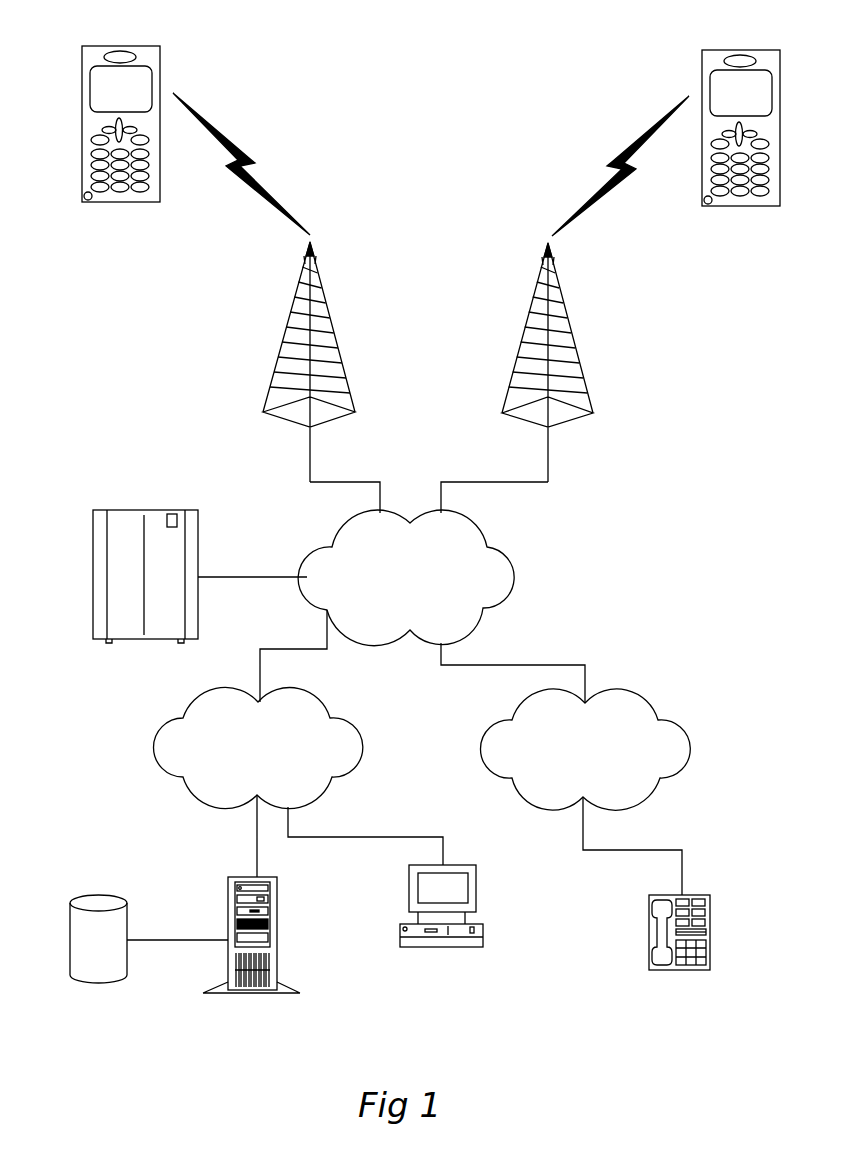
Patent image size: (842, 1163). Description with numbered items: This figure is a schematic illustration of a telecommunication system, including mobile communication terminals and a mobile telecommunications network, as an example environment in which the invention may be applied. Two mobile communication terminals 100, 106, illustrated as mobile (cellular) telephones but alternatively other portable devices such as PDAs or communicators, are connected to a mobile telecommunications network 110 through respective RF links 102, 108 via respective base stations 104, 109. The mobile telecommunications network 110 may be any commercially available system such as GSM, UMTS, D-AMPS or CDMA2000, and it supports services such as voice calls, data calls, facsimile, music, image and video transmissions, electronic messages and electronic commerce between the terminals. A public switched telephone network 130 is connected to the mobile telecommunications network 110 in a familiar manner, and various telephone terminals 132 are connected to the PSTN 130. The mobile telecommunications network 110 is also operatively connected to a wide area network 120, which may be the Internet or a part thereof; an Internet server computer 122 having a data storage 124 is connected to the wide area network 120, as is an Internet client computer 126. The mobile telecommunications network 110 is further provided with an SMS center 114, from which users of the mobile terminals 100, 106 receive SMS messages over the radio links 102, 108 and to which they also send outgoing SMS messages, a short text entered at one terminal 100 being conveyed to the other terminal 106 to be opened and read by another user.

The mobile communication terminal 100 is at (86, 60).
The RF link 102 is at (237, 152).
The base station 104 is at (300, 310).
The mobile communication terminal 106 is at (705, 62).
The RF link 108 is at (622, 148).
The base station 109 is at (535, 312).
The mobile telecommunications network 110 is at (395, 551).
The SMS center 114 is at (130, 522).
The wide area network 120 is at (243, 733).
The Internet server computer 122 is at (228, 912).
The data storage 124 is at (92, 903).
The Internet client computer 126 is at (425, 892).
The public switched telephone network 130 is at (570, 746).
The telephone terminal 132 is at (652, 912).